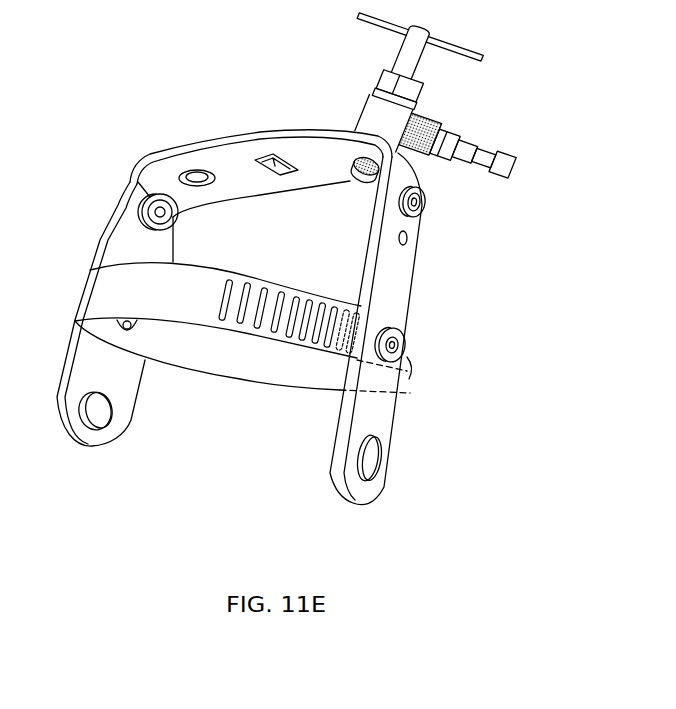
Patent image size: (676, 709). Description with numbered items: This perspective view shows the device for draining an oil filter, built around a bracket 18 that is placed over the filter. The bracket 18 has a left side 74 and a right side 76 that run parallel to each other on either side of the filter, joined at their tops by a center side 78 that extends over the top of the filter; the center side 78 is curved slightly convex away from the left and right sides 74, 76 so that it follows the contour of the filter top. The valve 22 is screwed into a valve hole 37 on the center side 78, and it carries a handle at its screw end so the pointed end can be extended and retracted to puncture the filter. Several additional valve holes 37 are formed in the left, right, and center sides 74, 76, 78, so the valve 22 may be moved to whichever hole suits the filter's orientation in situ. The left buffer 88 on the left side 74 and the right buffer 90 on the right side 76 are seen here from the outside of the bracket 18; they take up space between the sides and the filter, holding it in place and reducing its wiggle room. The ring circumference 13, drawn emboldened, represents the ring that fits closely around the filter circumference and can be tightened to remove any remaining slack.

The valve 22 is at (518, 86).
The center side 78 is at (315, 127).
The left side 74 is at (120, 255).
The right side 76 is at (408, 283).
The right buffer 90 is at (423, 212).
The left buffer 88 is at (132, 197).
The valve hole 37 is at (187, 174).
The bracket 18 is at (130, 383).
The ring circumference 13 is at (412, 392).